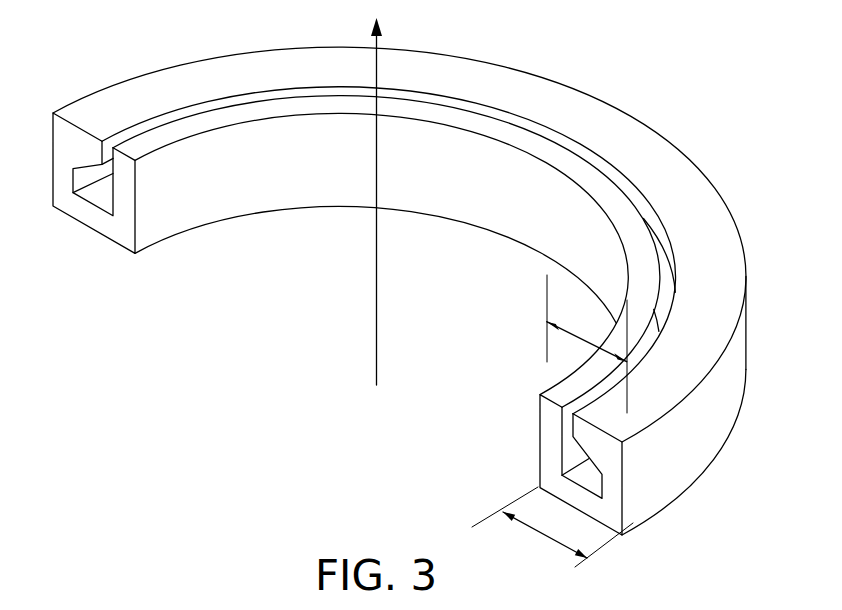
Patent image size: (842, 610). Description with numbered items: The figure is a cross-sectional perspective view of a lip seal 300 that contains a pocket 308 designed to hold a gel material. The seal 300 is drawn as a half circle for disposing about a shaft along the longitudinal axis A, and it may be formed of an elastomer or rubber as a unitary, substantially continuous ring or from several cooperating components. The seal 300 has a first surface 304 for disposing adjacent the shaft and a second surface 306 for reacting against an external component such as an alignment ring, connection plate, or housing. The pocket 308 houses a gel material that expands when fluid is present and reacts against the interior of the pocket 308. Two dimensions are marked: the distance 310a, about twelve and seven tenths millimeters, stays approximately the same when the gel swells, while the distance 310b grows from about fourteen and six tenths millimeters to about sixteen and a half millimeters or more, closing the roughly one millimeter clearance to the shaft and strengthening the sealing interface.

The lip seal 300 is at (62, 76).
The first surface 304 is at (221, 207).
The second surface 306 is at (688, 474).
The pocket 308 is at (101, 194).
The distance 310a is at (540, 533).
The distance 310b is at (578, 340).
The longitudinal axis A is at (375, 263).